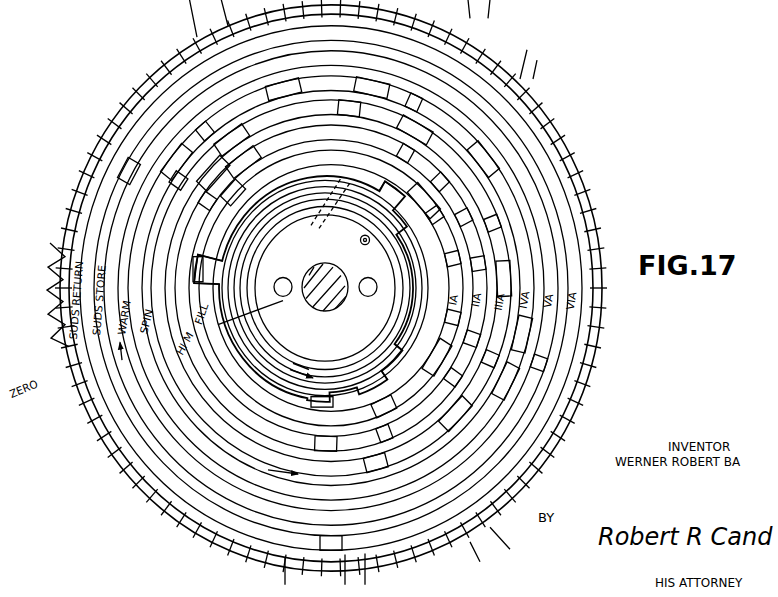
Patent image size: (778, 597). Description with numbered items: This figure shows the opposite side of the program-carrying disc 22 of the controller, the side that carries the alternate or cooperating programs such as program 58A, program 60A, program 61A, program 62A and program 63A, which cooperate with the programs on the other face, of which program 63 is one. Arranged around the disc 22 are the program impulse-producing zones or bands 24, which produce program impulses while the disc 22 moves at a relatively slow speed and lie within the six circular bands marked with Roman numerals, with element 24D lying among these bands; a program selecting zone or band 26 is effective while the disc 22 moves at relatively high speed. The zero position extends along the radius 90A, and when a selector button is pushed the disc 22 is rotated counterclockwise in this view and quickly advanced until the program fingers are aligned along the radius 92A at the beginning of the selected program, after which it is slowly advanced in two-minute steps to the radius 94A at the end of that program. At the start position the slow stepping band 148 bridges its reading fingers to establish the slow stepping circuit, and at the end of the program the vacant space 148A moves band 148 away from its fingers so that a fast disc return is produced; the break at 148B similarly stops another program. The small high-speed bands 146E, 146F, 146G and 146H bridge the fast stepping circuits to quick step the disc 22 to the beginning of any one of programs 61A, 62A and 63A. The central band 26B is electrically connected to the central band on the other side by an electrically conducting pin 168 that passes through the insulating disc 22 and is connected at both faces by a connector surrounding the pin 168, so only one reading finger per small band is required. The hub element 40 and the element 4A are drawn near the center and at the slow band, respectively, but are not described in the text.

The radius 94A is at (255, 125).
The program 63 is at (537, 39).
The program 58A is at (119, 193).
The cam lobe 24D is at (333, 313).
The program 60A is at (578, 99).
The vacant space 148A is at (246, 173).
The break 148B is at (384, 180).
The central band 26B is at (360, 209).
The pin 168 is at (347, 247).
The hub shaft 40 is at (341, 283).
The band 146E is at (304, 289).
The band 146F is at (370, 344).
The band 146G is at (346, 367).
The band 146H is at (303, 409).
The radius 90A is at (267, 316).
The cam block 4A is at (179, 278).
The slow stepping band 148 is at (194, 289).
The program selecting zone or band 26 is at (284, 363).
The program impulse-producing zones or bands 24 is at (209, 408).
The radius 92A is at (47, 294).
The disc 22 is at (318, 288).
The program 63A is at (295, 568).
The program 62A is at (516, 550).
The program 61A is at (291, 91).